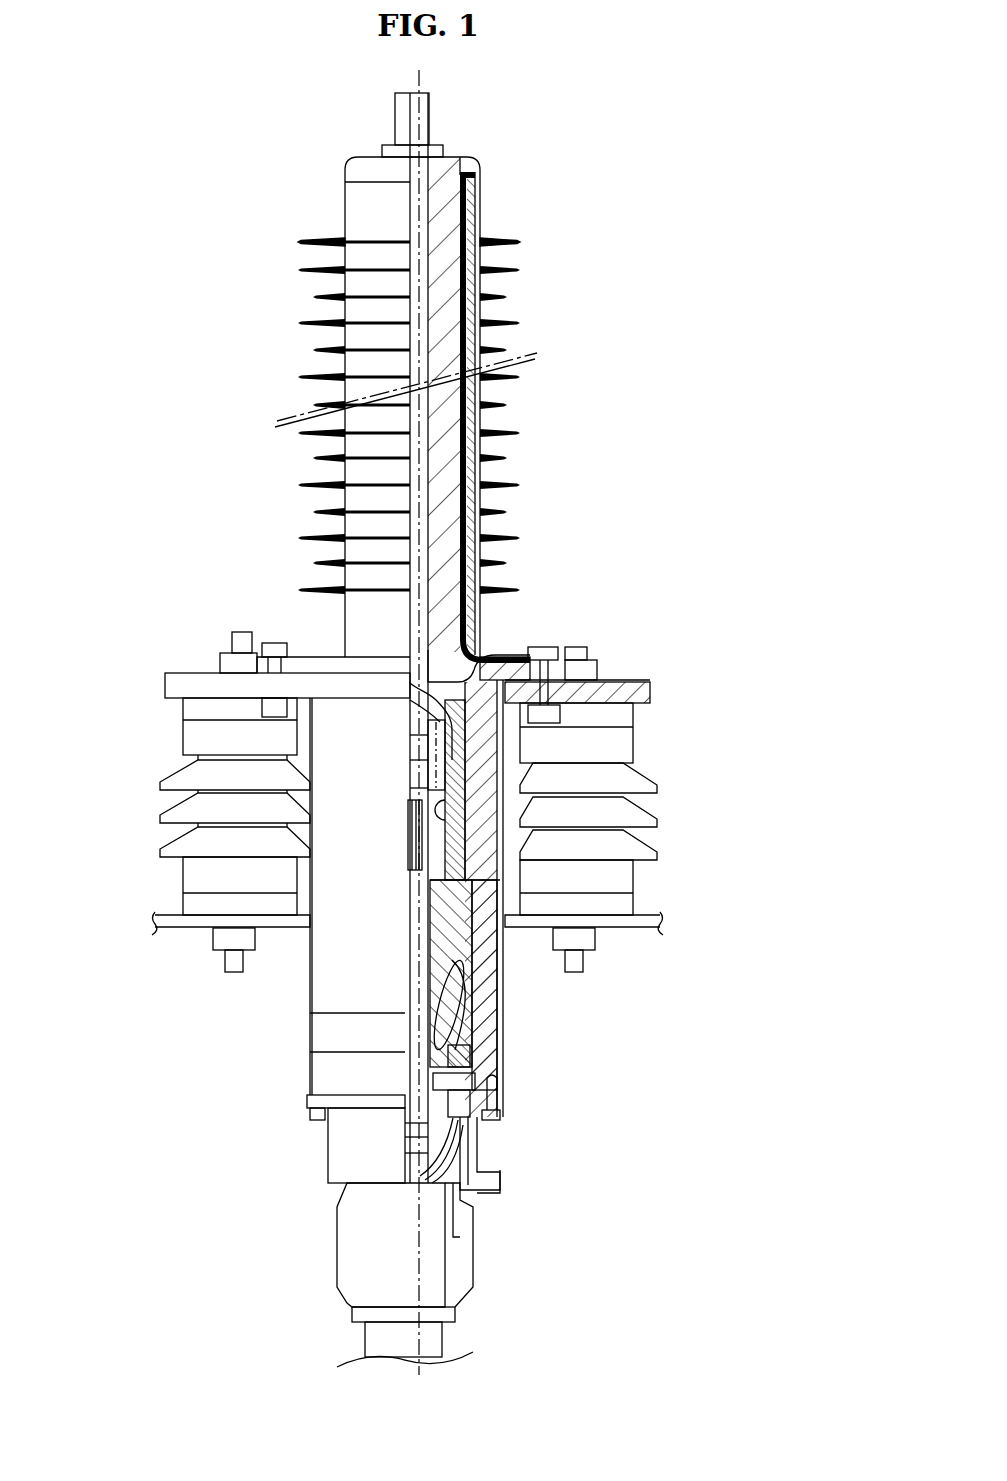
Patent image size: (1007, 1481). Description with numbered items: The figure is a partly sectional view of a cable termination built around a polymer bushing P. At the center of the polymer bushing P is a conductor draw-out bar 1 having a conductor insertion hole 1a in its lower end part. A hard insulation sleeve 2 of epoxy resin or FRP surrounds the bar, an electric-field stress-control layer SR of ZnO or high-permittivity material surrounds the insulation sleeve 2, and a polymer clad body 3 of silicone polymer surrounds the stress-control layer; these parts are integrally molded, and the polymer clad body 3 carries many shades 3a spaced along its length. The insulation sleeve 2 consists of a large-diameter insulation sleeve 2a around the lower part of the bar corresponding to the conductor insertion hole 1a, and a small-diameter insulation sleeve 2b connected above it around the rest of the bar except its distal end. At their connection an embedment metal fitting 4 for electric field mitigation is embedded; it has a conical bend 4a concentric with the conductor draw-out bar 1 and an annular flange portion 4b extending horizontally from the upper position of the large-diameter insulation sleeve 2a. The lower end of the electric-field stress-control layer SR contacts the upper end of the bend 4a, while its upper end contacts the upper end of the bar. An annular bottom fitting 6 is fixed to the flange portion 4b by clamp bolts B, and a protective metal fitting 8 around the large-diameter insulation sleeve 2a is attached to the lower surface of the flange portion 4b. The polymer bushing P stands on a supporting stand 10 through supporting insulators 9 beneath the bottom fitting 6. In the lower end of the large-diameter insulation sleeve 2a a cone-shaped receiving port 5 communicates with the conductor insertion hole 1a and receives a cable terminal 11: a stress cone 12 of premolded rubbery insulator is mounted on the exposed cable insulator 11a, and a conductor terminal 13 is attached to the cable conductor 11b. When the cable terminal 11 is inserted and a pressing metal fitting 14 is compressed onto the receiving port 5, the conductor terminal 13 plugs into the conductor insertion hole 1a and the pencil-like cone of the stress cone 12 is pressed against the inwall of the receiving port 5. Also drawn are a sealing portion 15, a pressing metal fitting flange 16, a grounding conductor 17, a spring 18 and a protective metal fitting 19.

The conductor draw-out bar 1 is at (424, 121).
The conductor insertion hole 1a is at (445, 830).
The hard insulation sleeve 2 is at (620, 638).
The large-diameter insulation sleeve 2a is at (480, 748).
The small-diameter insulation sleeve 2b is at (447, 462).
The polymer clad body 3 is at (482, 285).
The shades 3a is at (519, 241).
The embedment metal fitting 4 is at (570, 621).
The conical bend 4a is at (470, 657).
The annular flange portion 4b is at (498, 672).
The cone-shaped receiving port 5 is at (453, 960).
The annular bottom fitting 6 is at (187, 672).
The protective metal fitting 8 is at (492, 1022).
The supporting insulators 9 is at (190, 782).
The supporting stand 10 is at (203, 918).
The cable terminal 11 is at (290, 936).
The cable insulator 11a is at (415, 1003).
The cable conductor 11b is at (407, 863).
The stress cone 12 is at (478, 975).
The conductor terminal 13 is at (418, 770).
The pressing metal fitting 14 is at (493, 1045).
The sealing portion 15 is at (453, 1275).
The pressing metal fitting flange 16 is at (492, 1093).
The grounding conductor 17 is at (403, 1165).
The spring 18 is at (492, 1075).
The protective metal fitting 19 is at (460, 1213).
The clamp bolts B is at (277, 643).
The polymer bushing P is at (290, 319).
The electric-field stress-control layer SR is at (495, 419).